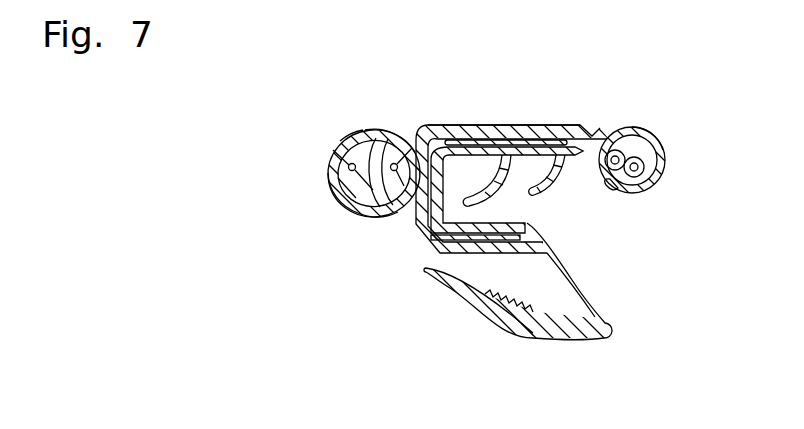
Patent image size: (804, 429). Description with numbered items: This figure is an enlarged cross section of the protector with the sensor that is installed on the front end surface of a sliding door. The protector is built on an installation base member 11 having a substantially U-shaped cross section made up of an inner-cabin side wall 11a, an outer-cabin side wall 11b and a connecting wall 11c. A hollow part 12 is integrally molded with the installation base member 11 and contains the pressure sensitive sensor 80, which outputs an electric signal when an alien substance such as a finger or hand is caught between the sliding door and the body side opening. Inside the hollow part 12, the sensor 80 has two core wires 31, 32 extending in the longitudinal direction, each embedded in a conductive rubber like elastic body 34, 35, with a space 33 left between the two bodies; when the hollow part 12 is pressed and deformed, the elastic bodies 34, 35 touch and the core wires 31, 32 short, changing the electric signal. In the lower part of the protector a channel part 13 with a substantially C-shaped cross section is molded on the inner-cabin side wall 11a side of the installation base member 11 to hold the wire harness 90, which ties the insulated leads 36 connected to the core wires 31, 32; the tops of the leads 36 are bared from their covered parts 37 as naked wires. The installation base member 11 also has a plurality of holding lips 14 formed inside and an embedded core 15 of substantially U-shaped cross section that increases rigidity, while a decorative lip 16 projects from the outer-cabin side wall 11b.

The installation base member 11 is at (432, 201).
The inner-cabin side wall 11a is at (432, 204).
The outer-cabin side wall 11b is at (432, 243).
The connecting wall 11c is at (432, 235).
The hollow part 12 is at (382, 133).
The channel part 13 is at (682, 128).
The holding lips 14 is at (547, 212).
The core 15 is at (432, 235).
The decorative lip 16 is at (432, 248).
The core wire 31 is at (338, 103).
The core wire 32 is at (372, 85).
The space 33 is at (343, 262).
The rubber like elastic body 34 is at (307, 201).
The rubber like elastic body 35 is at (425, 91).
The leads 36 is at (678, 201).
The covered parts 37 is at (671, 116).
The pressure sensitive sensor 80 is at (432, 235).
The wire harness 90 is at (432, 198).